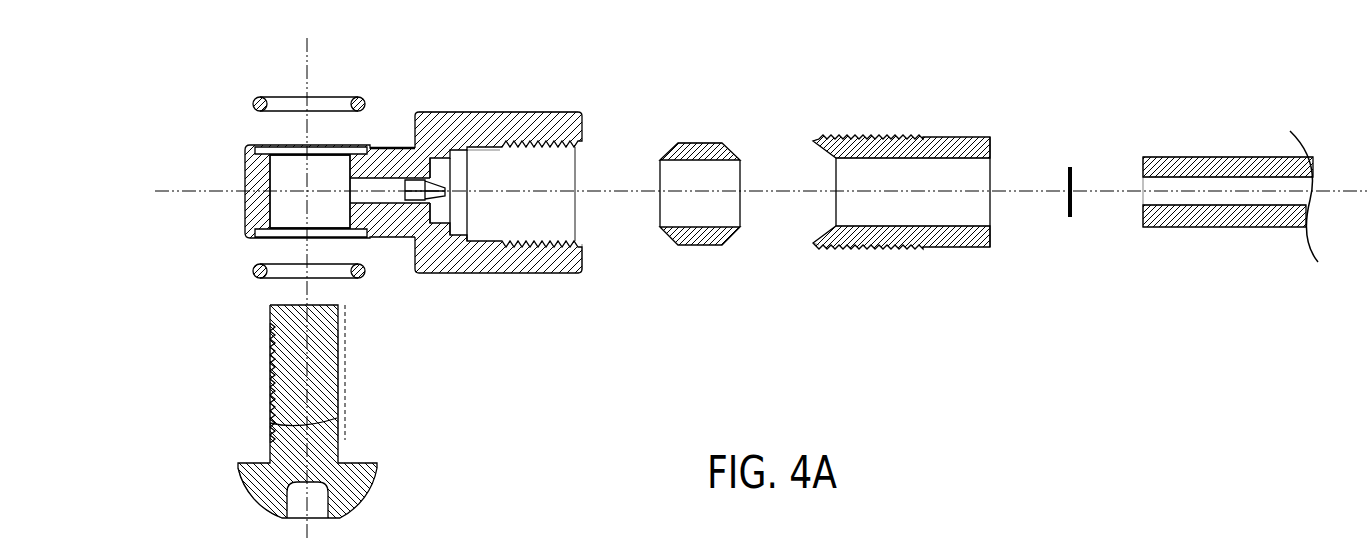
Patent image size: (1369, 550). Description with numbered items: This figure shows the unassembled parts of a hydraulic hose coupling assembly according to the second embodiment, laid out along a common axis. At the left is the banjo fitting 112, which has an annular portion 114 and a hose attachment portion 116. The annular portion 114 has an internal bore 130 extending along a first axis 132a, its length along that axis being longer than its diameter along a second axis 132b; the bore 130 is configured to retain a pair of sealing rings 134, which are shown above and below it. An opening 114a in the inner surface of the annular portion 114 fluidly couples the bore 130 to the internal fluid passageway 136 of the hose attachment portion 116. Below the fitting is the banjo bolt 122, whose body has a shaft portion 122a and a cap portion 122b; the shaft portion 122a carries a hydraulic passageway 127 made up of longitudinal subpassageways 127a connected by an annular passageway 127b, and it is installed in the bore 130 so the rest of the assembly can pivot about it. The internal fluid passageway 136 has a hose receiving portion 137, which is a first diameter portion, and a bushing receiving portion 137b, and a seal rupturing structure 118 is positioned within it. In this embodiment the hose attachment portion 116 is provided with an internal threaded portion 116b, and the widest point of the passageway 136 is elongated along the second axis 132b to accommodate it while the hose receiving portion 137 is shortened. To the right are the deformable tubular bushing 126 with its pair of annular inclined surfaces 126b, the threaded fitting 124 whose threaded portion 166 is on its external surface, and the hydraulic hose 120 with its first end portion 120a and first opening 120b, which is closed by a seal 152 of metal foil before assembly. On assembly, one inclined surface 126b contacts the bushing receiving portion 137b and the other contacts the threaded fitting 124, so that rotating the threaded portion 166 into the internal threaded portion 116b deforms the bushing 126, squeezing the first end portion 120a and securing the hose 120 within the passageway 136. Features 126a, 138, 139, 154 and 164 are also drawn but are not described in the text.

The banjo fitting 112 is at (440, 74).
The annular portion 114 is at (246, 218).
The opening 114a is at (355, 168).
The hose attachment portion 116 is at (545, 274).
The internal threaded portion 116b is at (584, 247).
The seal rupturing structure 118 is at (456, 160).
The hydraulic hose 120 is at (1252, 110).
The first end portion 120a is at (1162, 157).
The first opening 120b is at (1143, 200).
The banjo bolt 122 is at (408, 479).
The shaft portion 122a is at (270, 386).
The cap portion 122b is at (246, 494).
The threaded fitting 124 is at (942, 110).
The deformable tubular bushing 126 is at (703, 112).
The sleeve outer surface 126a is at (722, 162).
The annular inclined surfaces 126b is at (672, 240).
The hydraulic passageway 127 is at (425, 368).
The longitudinal subpassageways 127a is at (340, 370).
The annular passageway 127b is at (337, 418).
The internal bore 130 is at (312, 167).
The first axis 132a is at (307, 66).
The second axis 132b is at (191, 191).
The sealing rings 134 is at (252, 104).
The internal fluid passageway 136 is at (543, 180).
The hose receiving portion 137 is at (448, 236).
The bushing receiving portion 137b is at (458, 226).
The chamfer 138 is at (418, 240).
The nozzle 139 is at (406, 203).
The seal 152 is at (1067, 205).
The tube lumen 154 is at (1265, 200).
The nut bore 164 is at (978, 180).
The threaded portion 166 is at (862, 136).